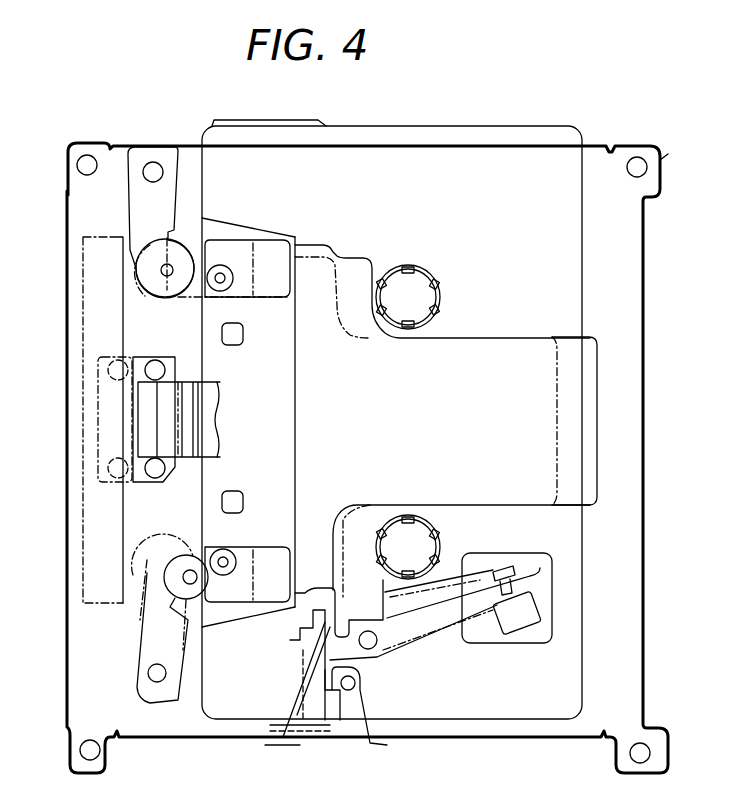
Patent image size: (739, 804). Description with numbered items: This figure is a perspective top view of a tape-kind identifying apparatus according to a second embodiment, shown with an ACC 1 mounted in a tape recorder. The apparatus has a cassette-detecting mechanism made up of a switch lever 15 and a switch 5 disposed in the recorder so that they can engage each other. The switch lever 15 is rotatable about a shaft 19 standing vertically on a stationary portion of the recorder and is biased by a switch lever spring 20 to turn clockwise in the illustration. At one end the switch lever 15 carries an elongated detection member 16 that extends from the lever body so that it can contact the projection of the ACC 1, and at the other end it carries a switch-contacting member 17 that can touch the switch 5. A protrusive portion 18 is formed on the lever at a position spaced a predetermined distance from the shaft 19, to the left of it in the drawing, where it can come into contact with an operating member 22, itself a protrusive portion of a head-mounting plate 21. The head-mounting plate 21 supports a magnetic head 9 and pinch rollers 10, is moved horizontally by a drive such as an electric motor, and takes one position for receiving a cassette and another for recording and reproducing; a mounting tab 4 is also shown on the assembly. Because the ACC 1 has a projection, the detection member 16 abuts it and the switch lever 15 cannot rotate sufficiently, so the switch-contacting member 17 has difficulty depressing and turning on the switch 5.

The ACC 1 is at (582, 270).
The mounting tab 4 is at (657, 160).
The switch 5 is at (530, 610).
The magnetic head 9 is at (147, 420).
The pinch rollers 10 is at (150, 288).
The switch lever 15 is at (445, 655).
The detection member 16 is at (258, 742).
The switch-contacting member 17 is at (507, 570).
The protrusive portion 18 is at (325, 622).
The shaft 19 is at (370, 648).
The switch lever spring 20 is at (370, 745).
The head-mounting plate 21 is at (597, 410).
The operating member 22 is at (373, 607).